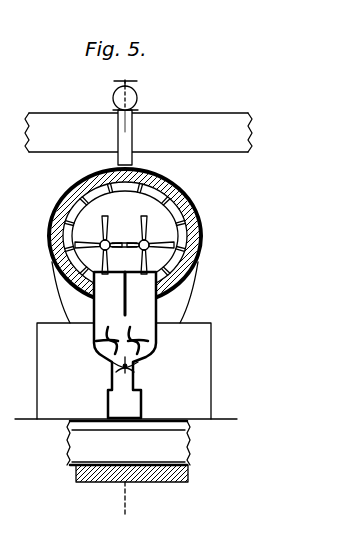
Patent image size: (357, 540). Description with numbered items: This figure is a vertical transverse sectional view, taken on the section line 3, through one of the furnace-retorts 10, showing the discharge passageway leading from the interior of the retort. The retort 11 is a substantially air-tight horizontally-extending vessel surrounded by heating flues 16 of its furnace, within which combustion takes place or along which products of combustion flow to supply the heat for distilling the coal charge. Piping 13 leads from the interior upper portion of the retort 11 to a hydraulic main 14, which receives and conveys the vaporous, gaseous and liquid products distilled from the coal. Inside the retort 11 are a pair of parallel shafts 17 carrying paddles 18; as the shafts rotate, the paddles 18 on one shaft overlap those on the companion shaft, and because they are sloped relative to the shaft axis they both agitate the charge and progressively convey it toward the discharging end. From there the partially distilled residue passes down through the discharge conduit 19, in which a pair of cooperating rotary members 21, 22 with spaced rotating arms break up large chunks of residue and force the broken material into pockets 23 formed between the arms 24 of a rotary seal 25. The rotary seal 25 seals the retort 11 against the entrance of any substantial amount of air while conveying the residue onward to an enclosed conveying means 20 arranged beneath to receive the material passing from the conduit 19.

The section line 3 is at (123, 298).
The furnace-retort 10 is at (203, 243).
The retort 11 is at (97, 212).
The piping 13 is at (123, 133).
The hydraulic main 14 is at (217, 127).
The heating flues 16 is at (67, 224).
The parallel shafts 17 is at (100, 250).
The paddles 18 is at (141, 222).
The discharge conduit 19 is at (138, 307).
The enclosed conveying means 20 is at (133, 452).
The rotary member 21 is at (147, 343).
The rotary member 22 is at (105, 333).
The pockets 23 is at (113, 362).
The arms 24 is at (117, 373).
The rotary seal 25 is at (133, 375).